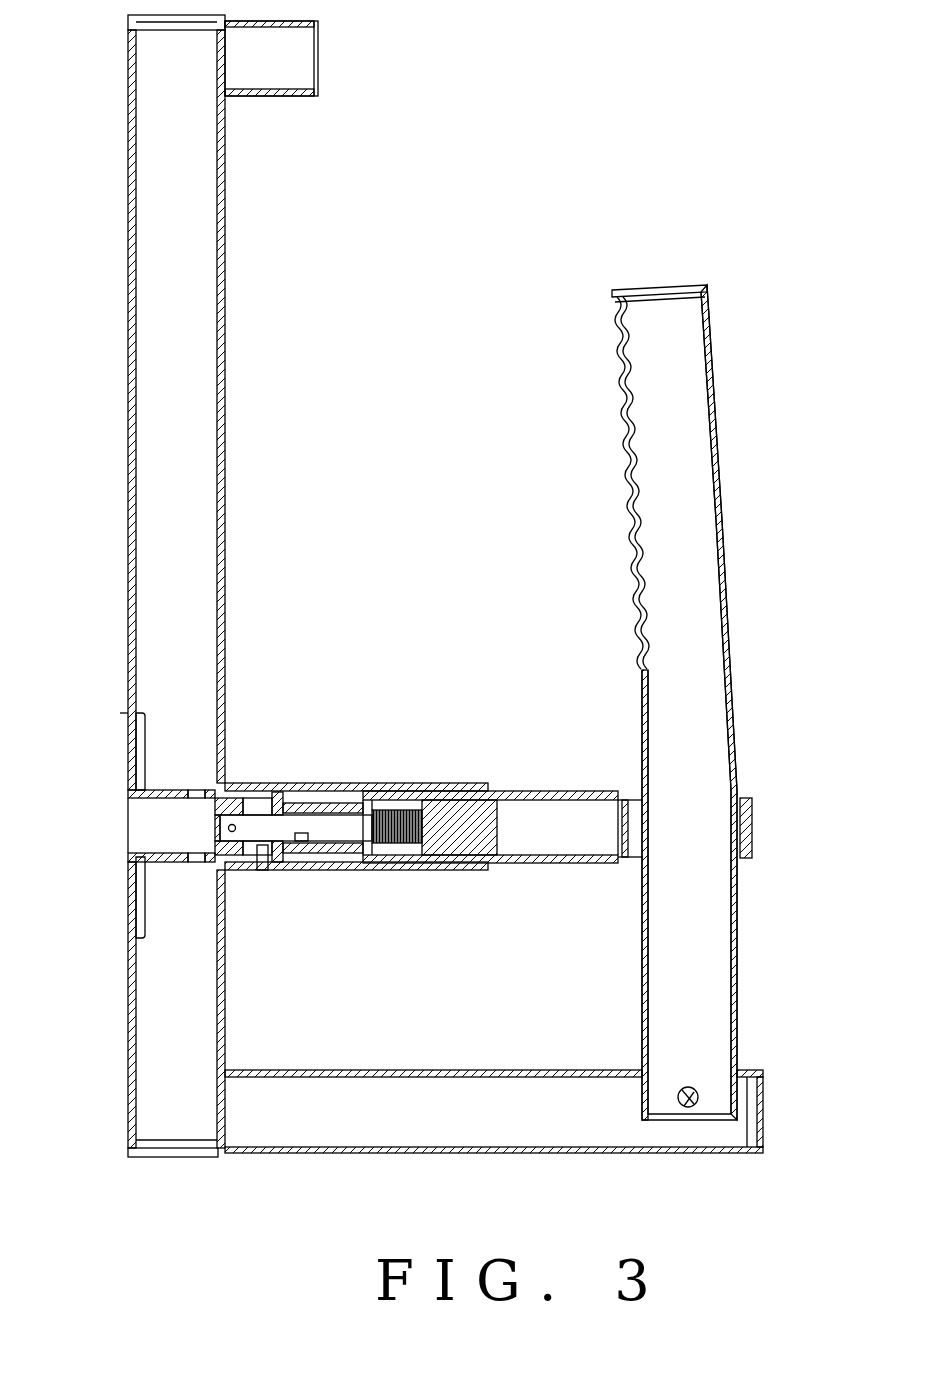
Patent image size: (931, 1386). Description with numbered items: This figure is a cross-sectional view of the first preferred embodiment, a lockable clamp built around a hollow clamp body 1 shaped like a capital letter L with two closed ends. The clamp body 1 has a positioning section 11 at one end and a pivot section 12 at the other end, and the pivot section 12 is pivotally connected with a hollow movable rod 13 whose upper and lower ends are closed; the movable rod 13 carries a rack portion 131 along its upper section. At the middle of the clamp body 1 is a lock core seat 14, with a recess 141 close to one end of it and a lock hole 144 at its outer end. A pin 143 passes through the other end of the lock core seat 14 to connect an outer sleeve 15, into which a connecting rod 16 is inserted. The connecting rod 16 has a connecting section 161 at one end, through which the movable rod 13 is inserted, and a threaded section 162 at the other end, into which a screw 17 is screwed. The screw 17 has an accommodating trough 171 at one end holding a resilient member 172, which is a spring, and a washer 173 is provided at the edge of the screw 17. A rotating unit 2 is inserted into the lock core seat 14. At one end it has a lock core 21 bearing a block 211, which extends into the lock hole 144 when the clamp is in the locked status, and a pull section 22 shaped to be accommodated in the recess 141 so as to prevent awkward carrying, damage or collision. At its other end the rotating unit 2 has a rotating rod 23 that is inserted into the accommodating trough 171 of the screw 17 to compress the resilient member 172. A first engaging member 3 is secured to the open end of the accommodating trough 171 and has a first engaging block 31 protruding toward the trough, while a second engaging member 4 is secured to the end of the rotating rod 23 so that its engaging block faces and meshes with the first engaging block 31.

The clamp body 1 is at (226, 320).
The positioning section 11 is at (288, 93).
The pivot section 12 is at (722, 1137).
The movable rod 13 is at (714, 603).
The rack portion 131 is at (623, 423).
The lock core seat 14 is at (255, 790).
The recess 141 is at (132, 700).
The pin 143 is at (265, 870).
The lock hole 144 is at (188, 793).
The outer sleeve 15 is at (448, 785).
The connecting rod 16 is at (545, 793).
The connecting section 161 is at (747, 800).
The threaded section 162 is at (397, 870).
The screw 17 is at (503, 865).
The accommodating trough 171 is at (381, 815).
The resilient member 172 is at (406, 803).
The washer 173 is at (286, 800).
The rotating unit 2 is at (233, 857).
The lock core 21 is at (150, 830).
The block 211 is at (206, 797).
The pull section 22 is at (130, 747).
The rotating rod 23 is at (337, 808).
The first engaging member 3 is at (297, 818).
The first engaging block 31 is at (303, 848).
The second engaging member 4 is at (367, 860).